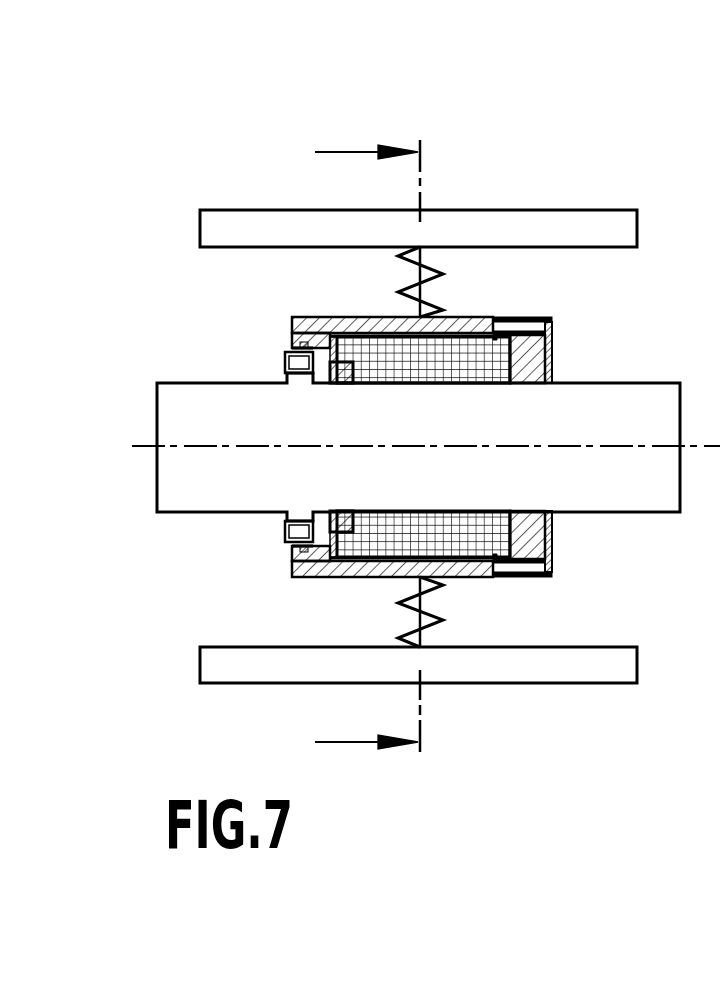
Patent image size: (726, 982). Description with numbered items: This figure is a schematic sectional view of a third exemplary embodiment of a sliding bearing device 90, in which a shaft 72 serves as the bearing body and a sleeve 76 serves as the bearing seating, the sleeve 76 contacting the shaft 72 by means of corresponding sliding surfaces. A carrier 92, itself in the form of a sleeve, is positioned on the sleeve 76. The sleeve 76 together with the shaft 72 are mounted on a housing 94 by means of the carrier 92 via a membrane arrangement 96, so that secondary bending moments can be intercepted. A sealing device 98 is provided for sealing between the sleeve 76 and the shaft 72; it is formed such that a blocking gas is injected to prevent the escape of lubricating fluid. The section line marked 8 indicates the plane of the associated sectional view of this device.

The section line 8- 8 is at (367, 448).
The shaft 72 is at (637, 492).
The sleeve 76 is at (553, 352).
The sliding bearing device 90 is at (566, 158).
The carrier 92 is at (478, 567).
The housing 94 is at (553, 668).
The membrane arrangement 96 is at (405, 607).
The sealing device 98 is at (285, 370).